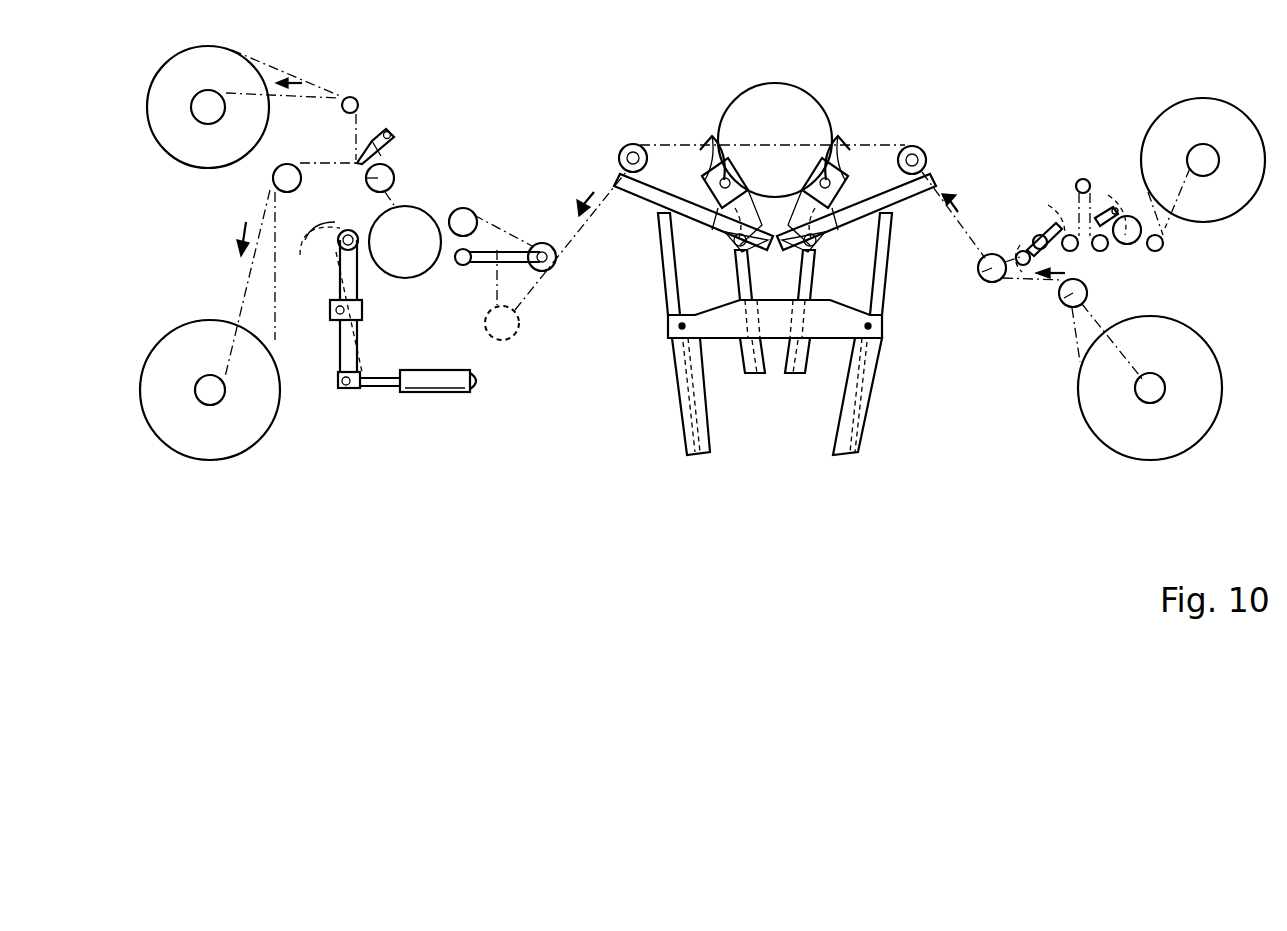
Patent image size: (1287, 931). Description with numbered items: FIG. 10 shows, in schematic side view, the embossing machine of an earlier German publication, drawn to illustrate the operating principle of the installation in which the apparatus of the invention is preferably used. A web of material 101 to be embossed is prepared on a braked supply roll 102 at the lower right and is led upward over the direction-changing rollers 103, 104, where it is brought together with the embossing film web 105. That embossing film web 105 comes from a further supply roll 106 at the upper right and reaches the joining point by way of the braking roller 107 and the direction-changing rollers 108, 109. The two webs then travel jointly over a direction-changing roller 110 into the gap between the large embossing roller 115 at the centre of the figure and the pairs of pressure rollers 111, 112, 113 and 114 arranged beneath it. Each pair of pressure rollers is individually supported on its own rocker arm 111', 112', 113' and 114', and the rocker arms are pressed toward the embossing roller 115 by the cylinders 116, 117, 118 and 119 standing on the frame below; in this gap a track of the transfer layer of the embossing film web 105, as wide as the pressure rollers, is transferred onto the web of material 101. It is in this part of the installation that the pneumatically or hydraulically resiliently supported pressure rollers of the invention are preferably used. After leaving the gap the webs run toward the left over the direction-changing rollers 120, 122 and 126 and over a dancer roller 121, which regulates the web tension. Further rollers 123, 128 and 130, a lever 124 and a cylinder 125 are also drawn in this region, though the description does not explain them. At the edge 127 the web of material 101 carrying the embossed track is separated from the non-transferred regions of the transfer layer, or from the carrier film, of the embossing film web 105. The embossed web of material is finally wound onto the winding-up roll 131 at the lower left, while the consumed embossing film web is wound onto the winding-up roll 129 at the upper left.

The web of material 101 is at (1086, 326).
The braked supply roll 102 is at (1178, 422).
The direction-changing roller 103 is at (1065, 306).
The direction-changing roller 104 is at (987, 282).
The embossing film web 105 is at (1162, 250).
The further supply roll 106 is at (1235, 118).
The braking roller 107 is at (1112, 206).
The direction-changing roller 108 is at (1076, 184).
The direction-changing roller 109 is at (1022, 246).
The direction-changing roller 110 is at (928, 150).
The pair of pressure rollers 111 is at (849, 137).
The rocker arm 111' is at (865, 223).
The pair of pressure rollers 112 is at (808, 190).
The rocker arm 112' is at (856, 220).
The pair of pressure rollers 113 is at (732, 190).
The rocker arm 113' is at (728, 255).
The pair of pressure rollers 114 is at (697, 137).
The rocker arm 114' is at (689, 214).
The embossing roller 115 is at (777, 95).
The cylinder 116 is at (880, 396).
The cylinder 117 is at (800, 375).
The cylinder 118 is at (752, 370).
The cylinder 119 is at (680, 396).
The direction-changing roller 120 is at (628, 148).
The dancer roller 121 is at (540, 243).
The direction-changing roller 122 is at (468, 212).
The drive roller 123 is at (413, 222).
The pivot lever 124 is at (334, 248).
The actuating cylinder 125 is at (455, 378).
The direction-changing roller 126 is at (368, 178).
The edge 127 is at (385, 130).
The guide roller 128 is at (343, 98).
The winding-up roll 129 is at (229, 72).
The guide roller 130 is at (274, 176).
The winding-up roll 131 is at (200, 430).